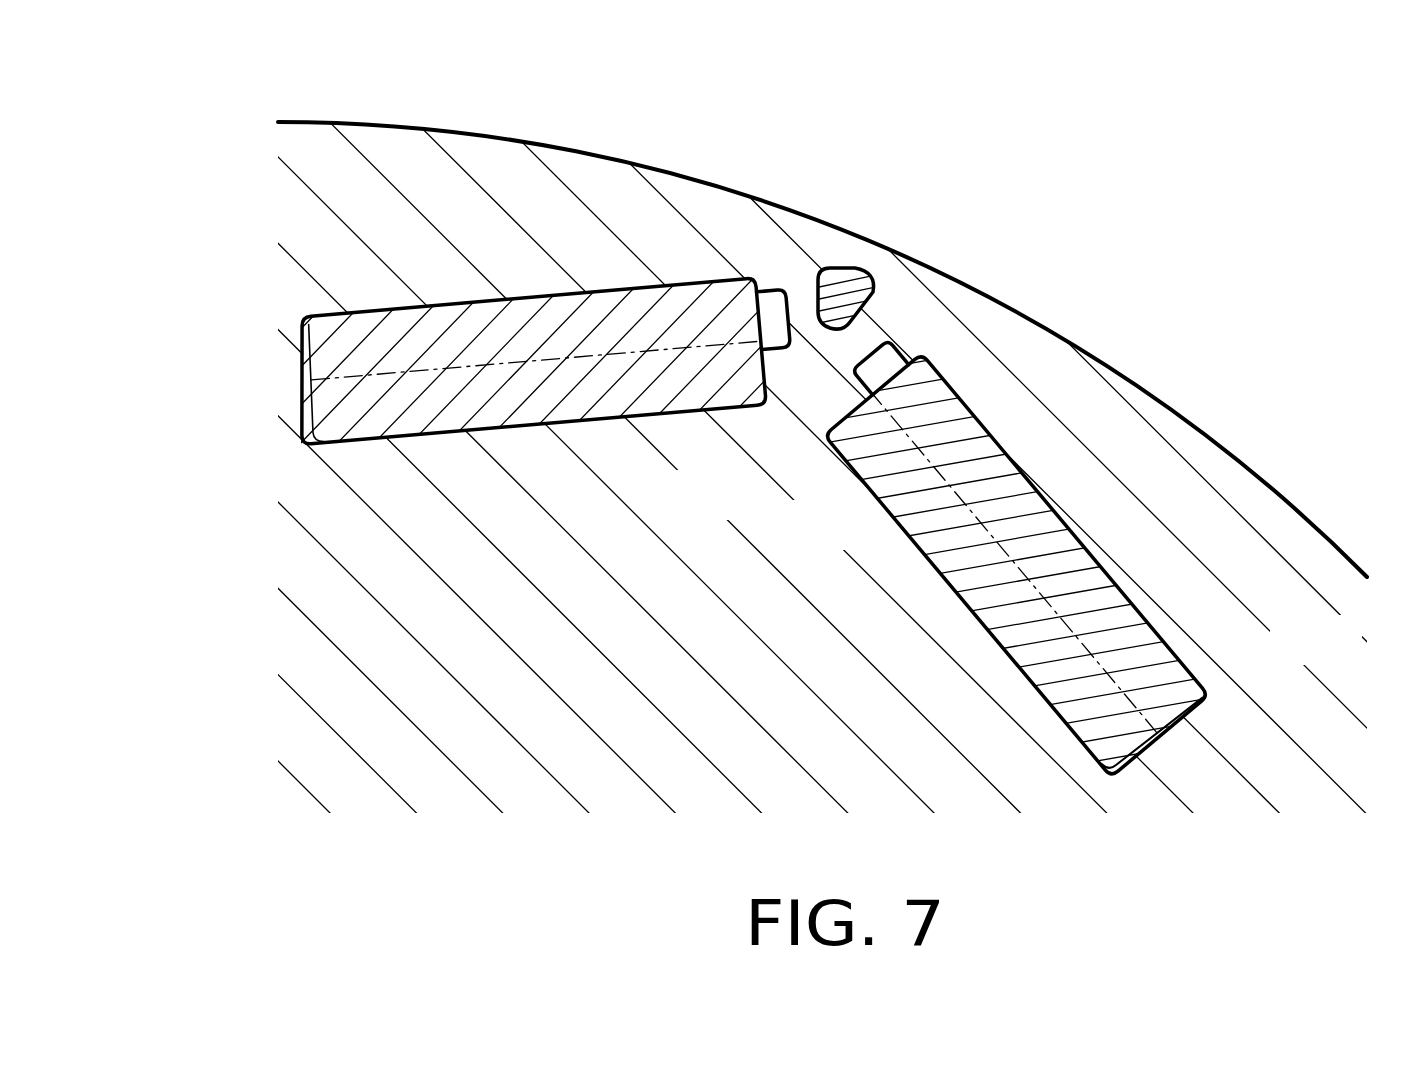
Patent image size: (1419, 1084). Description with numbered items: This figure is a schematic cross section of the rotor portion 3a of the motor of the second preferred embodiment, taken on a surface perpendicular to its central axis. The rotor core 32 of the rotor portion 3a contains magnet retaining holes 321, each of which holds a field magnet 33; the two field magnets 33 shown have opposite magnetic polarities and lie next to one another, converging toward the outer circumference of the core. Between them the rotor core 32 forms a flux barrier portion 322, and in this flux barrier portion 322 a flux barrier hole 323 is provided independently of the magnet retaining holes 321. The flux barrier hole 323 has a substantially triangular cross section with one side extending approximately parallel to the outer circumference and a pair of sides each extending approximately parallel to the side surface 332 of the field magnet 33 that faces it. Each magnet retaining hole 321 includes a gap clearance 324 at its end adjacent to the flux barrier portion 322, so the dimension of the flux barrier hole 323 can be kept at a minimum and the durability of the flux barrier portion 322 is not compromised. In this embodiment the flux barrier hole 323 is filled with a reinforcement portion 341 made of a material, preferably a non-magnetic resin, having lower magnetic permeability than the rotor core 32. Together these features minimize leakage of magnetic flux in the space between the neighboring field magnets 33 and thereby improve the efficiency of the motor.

The rotor portion 3a is at (229, 104).
The rotor core 32 is at (318, 175).
The magnet retaining hole 321 is at (756, 434).
The flux barrier portion 322 is at (910, 304).
The flux barrier hole 323 is at (872, 277).
The gap clearance 324 is at (760, 313).
The field magnet 33 is at (425, 335).
The side surface 332 is at (838, 408).
The reinforcement portion 341 is at (830, 268).